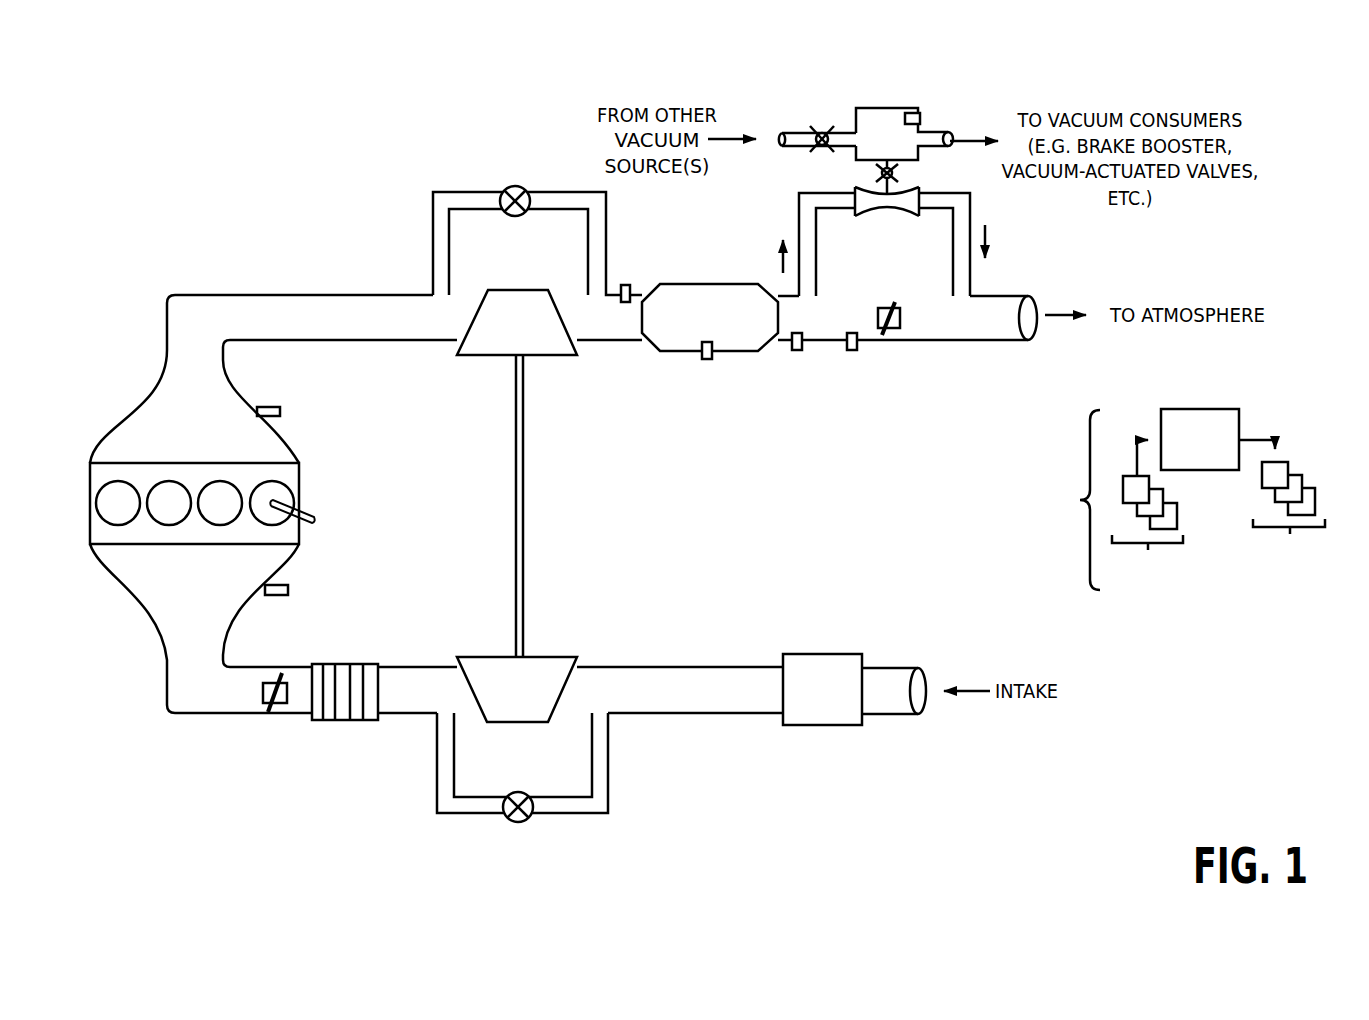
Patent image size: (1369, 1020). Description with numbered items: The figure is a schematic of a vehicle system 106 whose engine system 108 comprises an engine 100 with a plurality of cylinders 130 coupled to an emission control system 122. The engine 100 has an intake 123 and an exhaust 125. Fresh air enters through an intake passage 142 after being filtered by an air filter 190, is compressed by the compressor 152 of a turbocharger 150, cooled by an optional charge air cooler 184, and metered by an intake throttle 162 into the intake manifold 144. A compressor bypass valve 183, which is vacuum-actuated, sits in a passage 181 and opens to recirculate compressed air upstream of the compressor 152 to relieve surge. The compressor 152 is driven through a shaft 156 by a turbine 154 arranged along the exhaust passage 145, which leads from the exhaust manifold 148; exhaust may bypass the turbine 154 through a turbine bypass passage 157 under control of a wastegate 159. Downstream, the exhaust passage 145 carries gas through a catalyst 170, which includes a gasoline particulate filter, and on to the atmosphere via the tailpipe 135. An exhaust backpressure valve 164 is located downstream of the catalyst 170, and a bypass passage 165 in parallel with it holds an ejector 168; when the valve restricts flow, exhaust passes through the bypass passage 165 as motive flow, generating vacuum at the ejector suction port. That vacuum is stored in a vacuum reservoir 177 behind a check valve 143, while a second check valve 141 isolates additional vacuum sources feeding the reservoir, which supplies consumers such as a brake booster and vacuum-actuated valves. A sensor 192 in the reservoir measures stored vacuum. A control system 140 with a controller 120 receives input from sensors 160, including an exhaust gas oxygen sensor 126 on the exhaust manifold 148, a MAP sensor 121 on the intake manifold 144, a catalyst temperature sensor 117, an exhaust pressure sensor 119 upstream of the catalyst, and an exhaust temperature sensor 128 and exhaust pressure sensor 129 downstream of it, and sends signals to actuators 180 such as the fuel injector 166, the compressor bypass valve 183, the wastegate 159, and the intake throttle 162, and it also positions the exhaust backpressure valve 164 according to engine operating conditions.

The engine 100 is at (176, 463).
The vehicle system 106 is at (1297, 138).
The engine system 108 is at (126, 285).
The catalyst temperature sensor 117 is at (707, 360).
The exhaust pressure sensor 119 is at (626, 286).
The controller 120 is at (1215, 453).
The MAP sensor 121 is at (268, 596).
The emission control system 122 is at (690, 258).
The intake 123 is at (204, 767).
The exhaust 125 is at (226, 255).
The exhaust gas oxygen sensor 126 is at (259, 407).
The exhaust temperature sensor 128 is at (797, 350).
The exhaust pressure sensor 129 is at (852, 350).
The cylinders 130 is at (108, 492).
The tailpipe 135 is at (1020, 296).
The control system 140 is at (1168, 503).
The check valve 141 is at (826, 131).
The intake passage 142 is at (878, 668).
The check valve 143 is at (880, 176).
The intake manifold 144 is at (212, 595).
The exhaust passage 145 is at (255, 295).
The exhaust manifold 148 is at (212, 415).
The turbocharger 150 is at (532, 506).
The compressor 152 is at (523, 724).
The turbine 154 is at (526, 290).
The shaft 156 is at (523, 545).
The turbine bypass passage 157 is at (447, 192).
The wastegate 159 is at (523, 189).
The sensors 160 is at (1147, 518).
The intake throttle 162 is at (263, 693).
The exhaust backpressure valve 164 is at (900, 318).
The bypass passage 165 is at (940, 193).
The fuel injector 166 is at (313, 515).
The ejector 168 is at (895, 216).
The catalyst 170 is at (732, 328).
The vacuum reservoir 177 is at (902, 146).
The actuators 180 is at (1283, 511).
The passage 181 is at (450, 815).
The compressor bypass valve 183 is at (527, 820).
The charge air cooler 184 is at (335, 664).
The air filter 190 is at (838, 703).
The sensor 192 is at (918, 118).